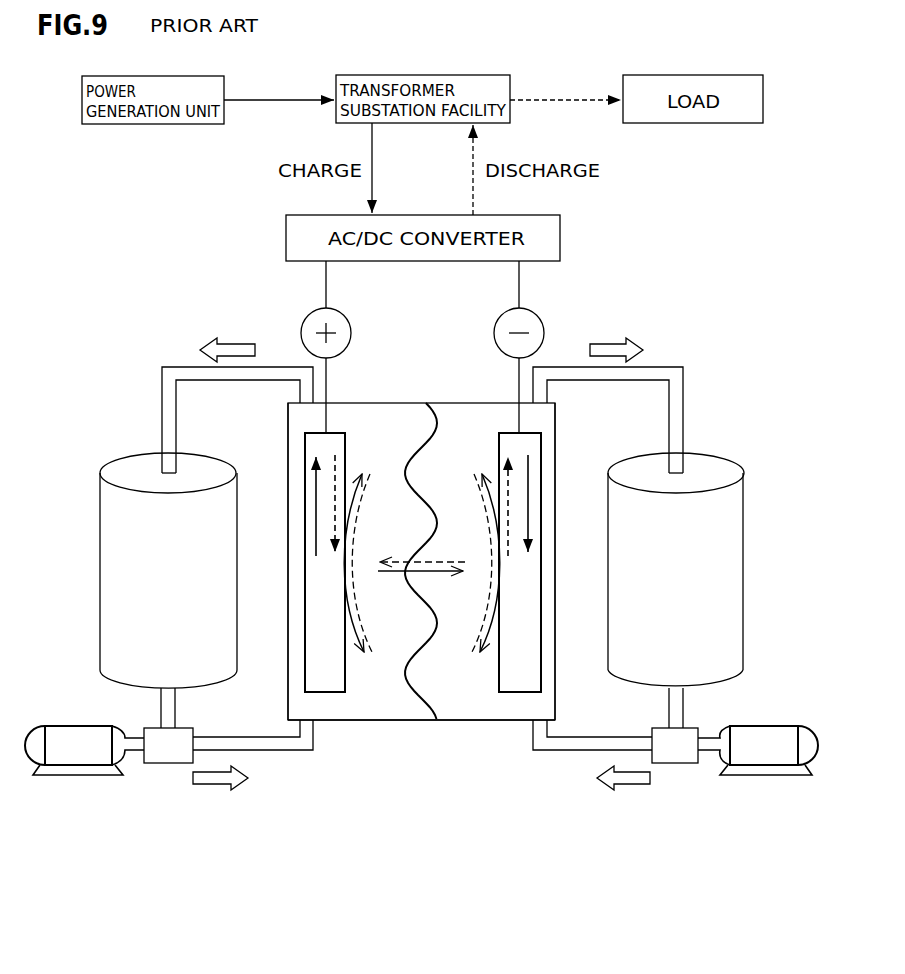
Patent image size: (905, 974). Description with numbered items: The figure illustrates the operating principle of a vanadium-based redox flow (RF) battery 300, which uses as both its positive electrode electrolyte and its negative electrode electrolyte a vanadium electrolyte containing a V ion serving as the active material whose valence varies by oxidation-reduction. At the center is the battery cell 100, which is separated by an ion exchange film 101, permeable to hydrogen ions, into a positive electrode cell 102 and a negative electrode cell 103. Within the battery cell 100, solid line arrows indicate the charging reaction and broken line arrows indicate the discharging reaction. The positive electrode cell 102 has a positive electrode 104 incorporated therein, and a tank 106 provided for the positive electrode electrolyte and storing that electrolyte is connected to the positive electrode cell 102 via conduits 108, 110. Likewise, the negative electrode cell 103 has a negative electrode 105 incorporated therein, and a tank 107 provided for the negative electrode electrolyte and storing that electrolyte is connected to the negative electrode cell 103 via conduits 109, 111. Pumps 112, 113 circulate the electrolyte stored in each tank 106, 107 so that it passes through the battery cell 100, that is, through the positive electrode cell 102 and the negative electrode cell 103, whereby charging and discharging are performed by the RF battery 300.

The battery cell 100 is at (422, 552).
The ion exchange film 101 is at (433, 719).
The positive electrode cell 102 is at (356, 723).
The negative electrode cell 103 is at (487, 723).
The positive electrode 104 is at (303, 684).
The negative electrode 105 is at (543, 684).
The tank 106 is at (118, 453).
The tank 107 is at (726, 457).
The conduit 108 is at (276, 752).
The conduit 109 is at (572, 752).
The conduit 110 is at (180, 366).
The conduit 111 is at (662, 366).
The pump 112 is at (60, 724).
The pump 113 is at (782, 724).
The vanadium-based RF battery 300 is at (421, 602).